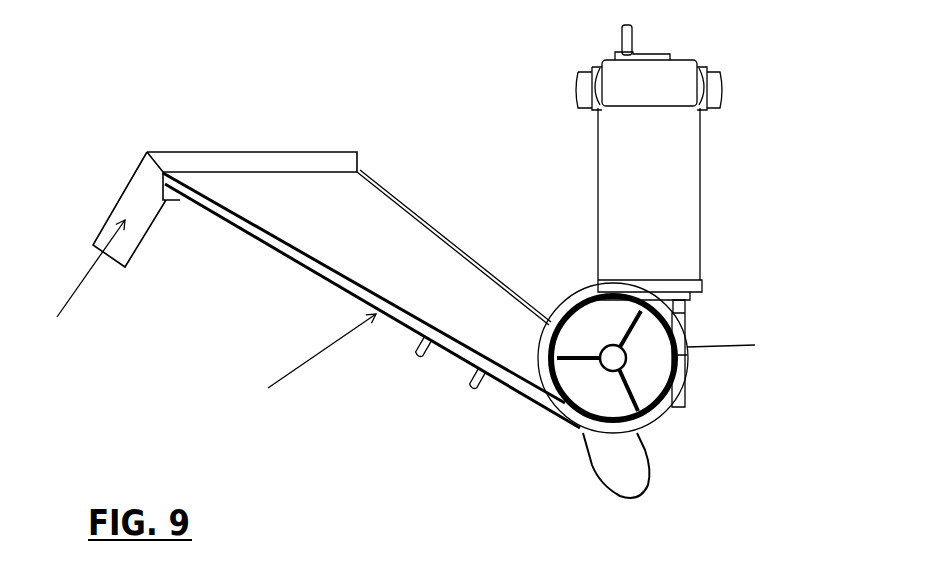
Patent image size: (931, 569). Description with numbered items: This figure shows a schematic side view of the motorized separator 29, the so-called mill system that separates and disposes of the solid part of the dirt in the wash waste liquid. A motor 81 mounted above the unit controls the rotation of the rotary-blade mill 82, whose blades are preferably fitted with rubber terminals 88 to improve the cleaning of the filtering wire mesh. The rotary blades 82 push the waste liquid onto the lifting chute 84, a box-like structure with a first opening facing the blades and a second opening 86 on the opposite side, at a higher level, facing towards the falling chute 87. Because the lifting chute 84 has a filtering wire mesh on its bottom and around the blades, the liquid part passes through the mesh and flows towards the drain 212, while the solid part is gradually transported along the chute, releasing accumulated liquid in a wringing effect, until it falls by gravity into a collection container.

The motorized separator 29 is at (142, 42).
The second opening 86 is at (225, 183).
The lifting chute 84 is at (338, 266).
The falling chute 87 is at (76, 291).
The motor 81 is at (703, 158).
The rubber terminals 88 is at (547, 363).
The rotary-blade mill 82 is at (624, 365).
The drain 212 is at (604, 474).